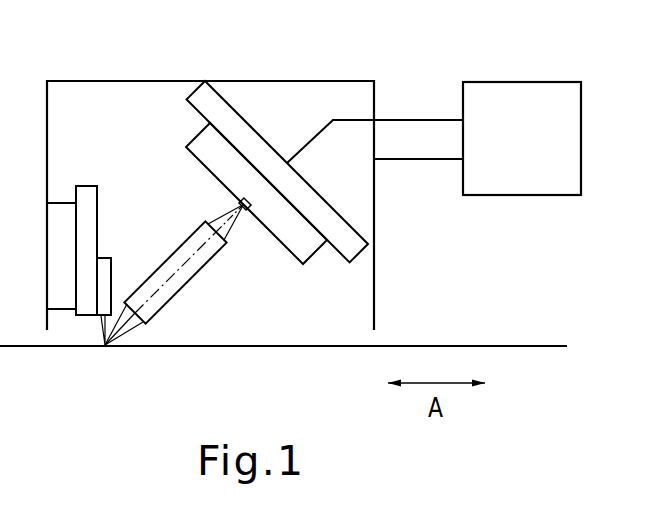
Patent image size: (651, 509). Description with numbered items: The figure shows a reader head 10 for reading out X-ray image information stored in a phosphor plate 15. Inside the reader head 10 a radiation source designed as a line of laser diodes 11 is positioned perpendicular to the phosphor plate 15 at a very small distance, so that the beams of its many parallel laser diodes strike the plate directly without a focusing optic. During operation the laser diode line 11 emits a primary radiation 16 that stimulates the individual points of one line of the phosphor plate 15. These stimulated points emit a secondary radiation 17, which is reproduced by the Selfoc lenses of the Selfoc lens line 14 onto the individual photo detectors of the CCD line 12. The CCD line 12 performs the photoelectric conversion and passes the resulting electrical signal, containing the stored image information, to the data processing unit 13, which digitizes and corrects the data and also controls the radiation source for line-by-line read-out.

The reader head 10 is at (77, 84).
The line of laser diodes 11 is at (100, 252).
The CCD line 12 is at (310, 252).
The data processing unit 13 is at (515, 90).
The Selfoc lens line 14 is at (185, 282).
The phosphor plate 15 is at (470, 346).
The primary radiation 16 is at (99, 331).
The secondary radiation 17 is at (236, 220).